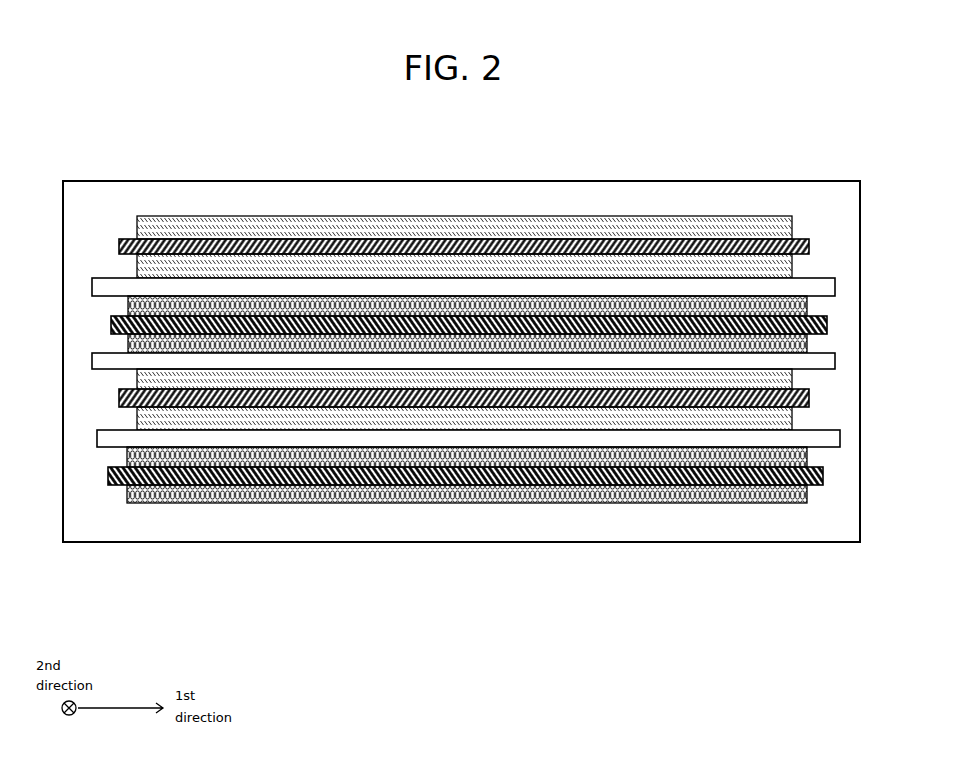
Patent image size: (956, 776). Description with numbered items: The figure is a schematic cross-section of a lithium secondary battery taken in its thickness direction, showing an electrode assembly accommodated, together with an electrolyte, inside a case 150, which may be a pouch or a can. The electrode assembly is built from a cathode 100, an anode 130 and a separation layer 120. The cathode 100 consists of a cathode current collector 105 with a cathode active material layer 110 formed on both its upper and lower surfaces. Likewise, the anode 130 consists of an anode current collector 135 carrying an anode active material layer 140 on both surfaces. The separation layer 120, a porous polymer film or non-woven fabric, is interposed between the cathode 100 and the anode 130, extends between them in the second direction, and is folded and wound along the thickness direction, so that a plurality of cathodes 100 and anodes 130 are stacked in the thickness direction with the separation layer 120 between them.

The cathode 100 is at (464, 520).
The cathode current collector 105 is at (623, 407).
The cathode active material layer 110 is at (590, 417).
The separation layer 120 is at (415, 438).
The anode 130 is at (465, 548).
The anode current collector 135 is at (207, 483).
The anode active material layer 140 is at (173, 495).
The case 150 is at (770, 542).